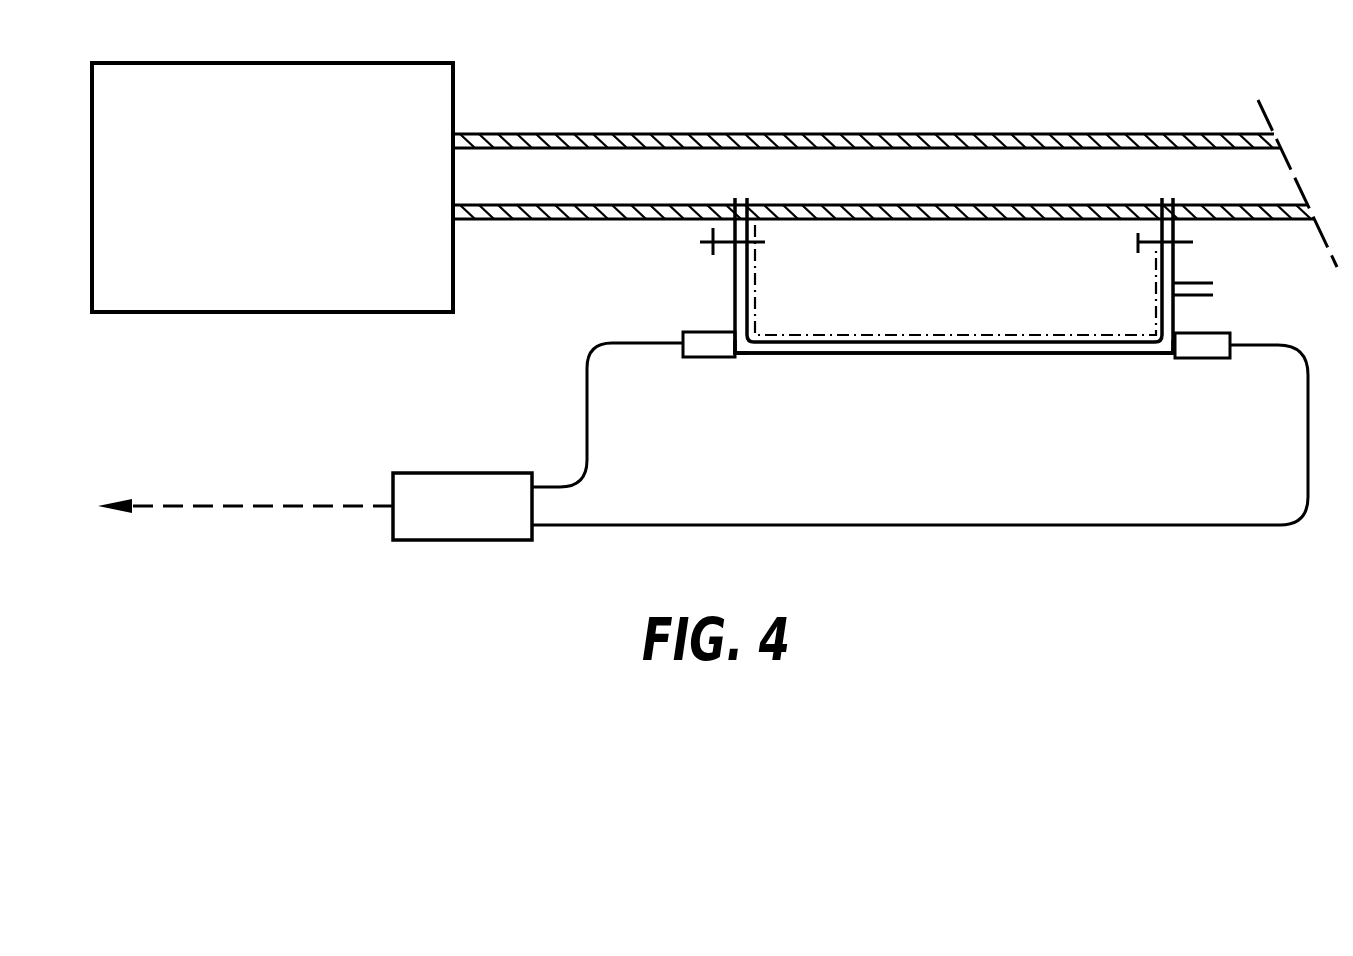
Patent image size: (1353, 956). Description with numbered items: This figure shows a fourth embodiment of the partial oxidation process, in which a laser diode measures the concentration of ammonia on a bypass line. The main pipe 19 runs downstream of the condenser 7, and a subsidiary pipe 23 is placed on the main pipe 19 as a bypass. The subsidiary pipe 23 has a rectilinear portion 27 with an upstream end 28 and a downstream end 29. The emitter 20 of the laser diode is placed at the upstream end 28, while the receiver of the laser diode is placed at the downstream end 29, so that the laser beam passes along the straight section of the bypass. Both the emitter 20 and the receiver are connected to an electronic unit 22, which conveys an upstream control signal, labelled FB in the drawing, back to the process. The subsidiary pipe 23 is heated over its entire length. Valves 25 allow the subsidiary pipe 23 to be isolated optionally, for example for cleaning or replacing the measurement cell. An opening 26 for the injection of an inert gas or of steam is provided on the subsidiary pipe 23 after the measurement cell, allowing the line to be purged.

The condenser 7 is at (282, 190).
The main pipe 19 is at (660, 131).
The emitter 20 is at (679, 332).
The electronic unit 22 is at (480, 521).
The subsidiary pipe 23 is at (732, 287).
The valves 25 is at (709, 242).
The opening 26 is at (1219, 288).
The rectilinear portion 27 is at (841, 357).
The upstream end 28 is at (743, 357).
The downstream end 29 is at (1175, 361).